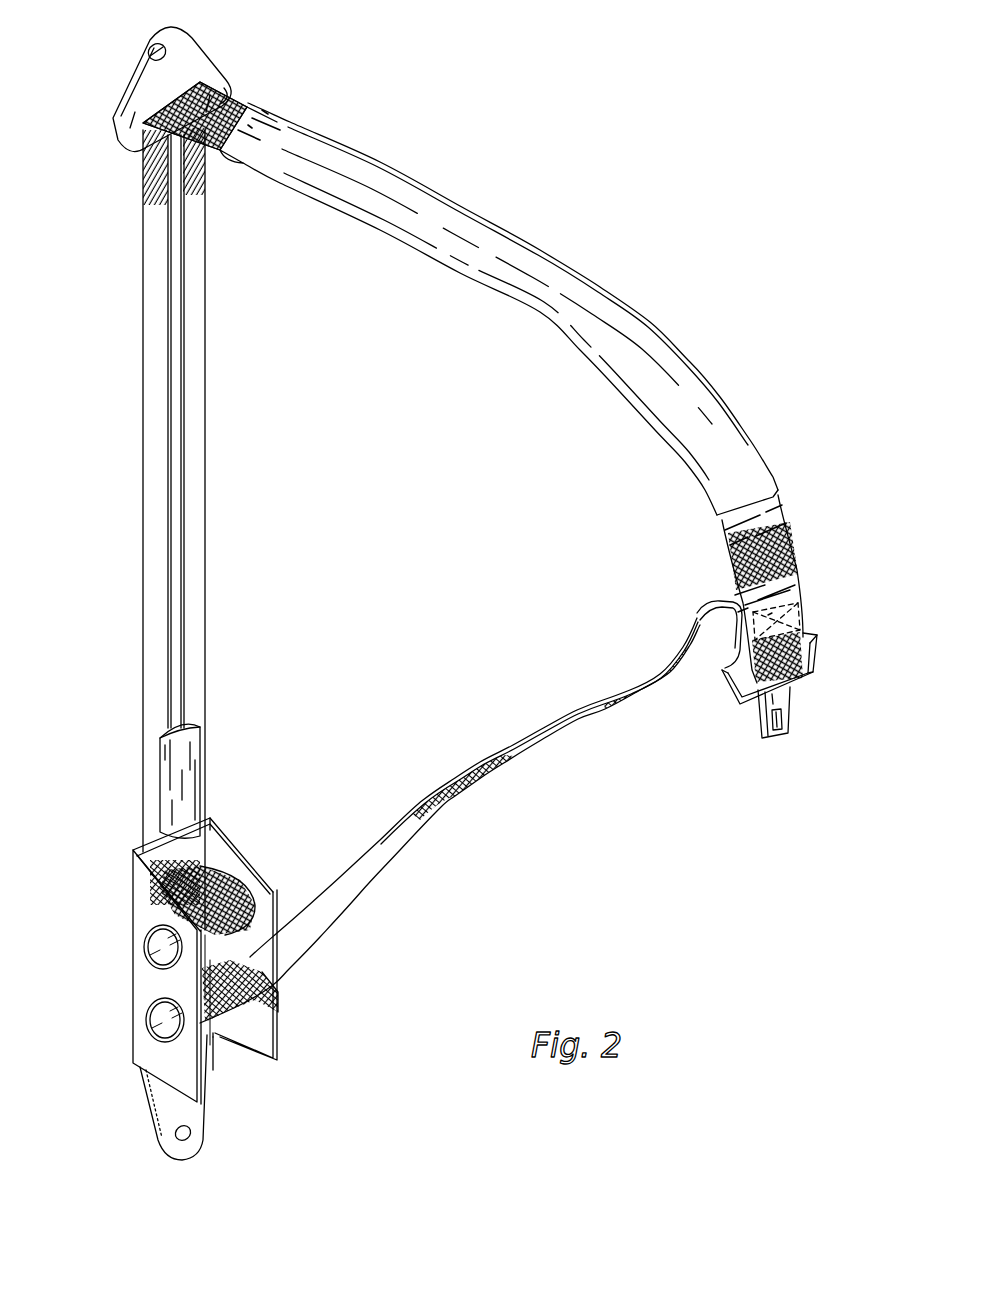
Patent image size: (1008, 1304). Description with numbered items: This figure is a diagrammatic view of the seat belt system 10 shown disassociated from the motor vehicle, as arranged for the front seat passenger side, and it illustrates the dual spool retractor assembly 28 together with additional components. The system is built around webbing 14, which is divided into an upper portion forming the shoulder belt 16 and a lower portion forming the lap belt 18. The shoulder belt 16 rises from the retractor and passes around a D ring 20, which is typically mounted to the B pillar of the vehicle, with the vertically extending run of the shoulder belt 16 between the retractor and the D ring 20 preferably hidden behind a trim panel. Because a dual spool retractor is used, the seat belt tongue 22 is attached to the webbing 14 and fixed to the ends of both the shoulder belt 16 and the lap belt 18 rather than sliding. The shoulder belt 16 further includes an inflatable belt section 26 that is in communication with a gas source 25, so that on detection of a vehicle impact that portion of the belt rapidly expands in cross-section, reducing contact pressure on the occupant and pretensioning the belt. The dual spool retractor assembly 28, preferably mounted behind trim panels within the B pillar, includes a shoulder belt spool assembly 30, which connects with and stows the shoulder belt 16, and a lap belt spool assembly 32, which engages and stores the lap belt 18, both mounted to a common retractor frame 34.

The seat belt system 10 is at (640, 212).
The webbing 14 is at (807, 618).
The shoulder belt 16 is at (790, 548).
The lap belt 18 is at (377, 855).
The D ring 20 is at (136, 92).
The seat belt tongue 22 is at (818, 654).
The gas source 25 is at (160, 737).
The inflatable belt section 26 is at (750, 454).
The dual spool retractor assembly 28 is at (232, 838).
The shoulder belt spool assembly 30 is at (157, 947).
The lap belt spool assembly 32 is at (157, 1020).
The retractor frame 34 is at (277, 1040).